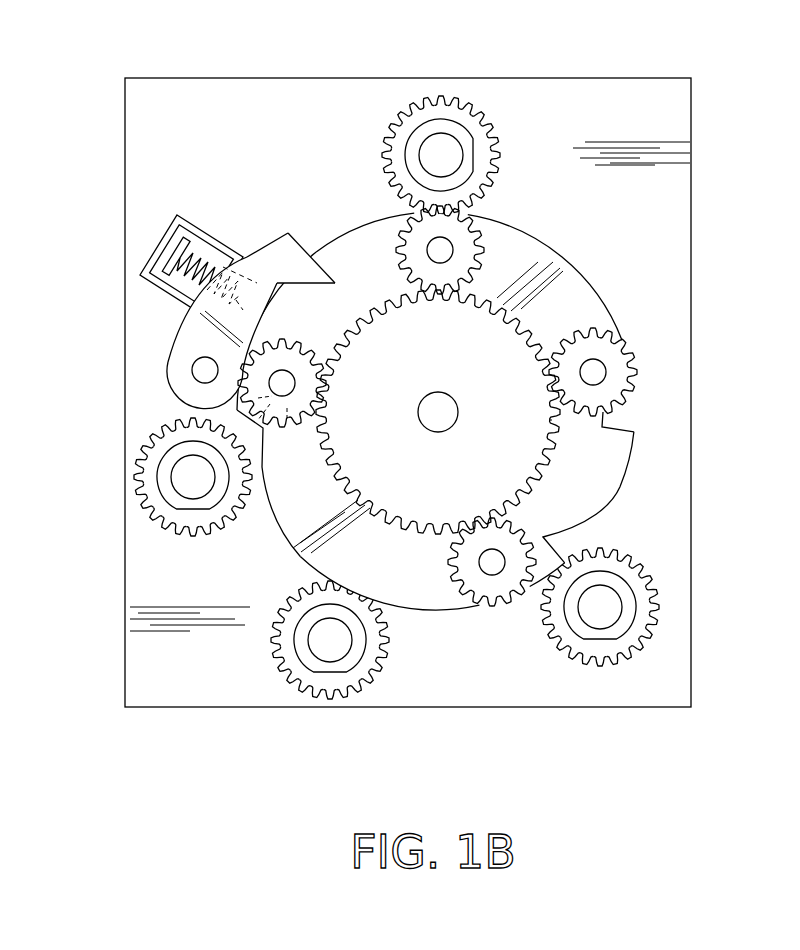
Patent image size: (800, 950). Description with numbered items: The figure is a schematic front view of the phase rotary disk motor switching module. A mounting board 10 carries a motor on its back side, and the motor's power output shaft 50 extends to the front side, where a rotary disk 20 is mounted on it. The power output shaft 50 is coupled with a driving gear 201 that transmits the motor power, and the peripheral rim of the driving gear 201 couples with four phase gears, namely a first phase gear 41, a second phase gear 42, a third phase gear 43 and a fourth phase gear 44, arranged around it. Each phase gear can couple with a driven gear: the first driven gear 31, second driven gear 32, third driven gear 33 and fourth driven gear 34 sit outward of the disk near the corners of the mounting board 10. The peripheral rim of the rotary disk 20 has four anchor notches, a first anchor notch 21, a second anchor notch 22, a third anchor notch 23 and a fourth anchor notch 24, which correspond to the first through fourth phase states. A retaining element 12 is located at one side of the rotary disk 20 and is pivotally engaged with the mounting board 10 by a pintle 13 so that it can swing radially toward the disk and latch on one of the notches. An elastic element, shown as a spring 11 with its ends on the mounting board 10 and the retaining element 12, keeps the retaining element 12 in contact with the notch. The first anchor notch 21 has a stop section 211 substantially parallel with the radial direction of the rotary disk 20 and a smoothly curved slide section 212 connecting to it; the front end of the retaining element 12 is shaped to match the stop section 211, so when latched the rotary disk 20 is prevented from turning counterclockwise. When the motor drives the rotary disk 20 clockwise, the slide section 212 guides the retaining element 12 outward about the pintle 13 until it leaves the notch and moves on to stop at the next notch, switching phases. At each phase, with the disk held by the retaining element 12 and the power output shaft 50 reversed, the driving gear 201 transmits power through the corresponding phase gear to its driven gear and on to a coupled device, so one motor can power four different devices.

The mounting board 10 is at (152, 92).
The spring 11 is at (175, 253).
The retaining element 12 is at (200, 328).
The pintle 13 is at (192, 369).
The rotary disk 20 is at (592, 480).
The first anchor notch 21 is at (295, 212).
The stop section 211 is at (328, 270).
The slide section 212 is at (293, 300).
The second anchor notch 22 is at (236, 414).
The third anchor notch 23 is at (566, 542).
The fourth anchor notch 24 is at (625, 420).
The first driven gear 31 is at (415, 120).
The second driven gear 32 is at (313, 683).
The third driven gear 33 is at (157, 505).
The fourth driven gear 34 is at (603, 652).
The first phase gear 41 is at (460, 238).
The second phase gear 42 is at (485, 590).
The third phase gear 43 is at (617, 365).
The fourth phase gear 44 is at (282, 398).
The power output shaft 50 is at (455, 397).
The driving gear 201 is at (480, 318).